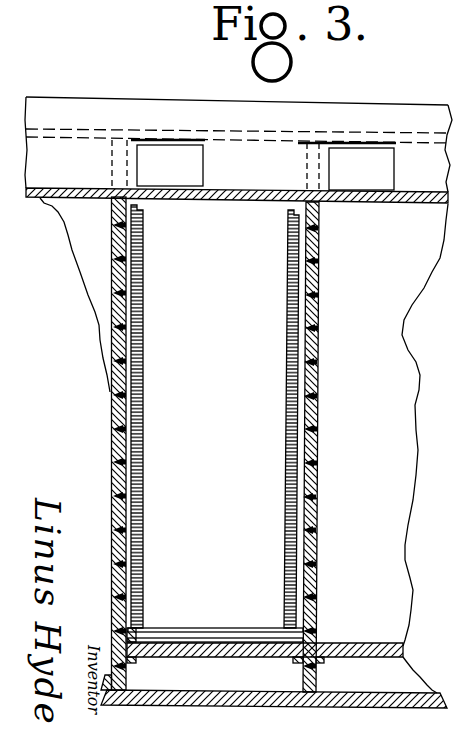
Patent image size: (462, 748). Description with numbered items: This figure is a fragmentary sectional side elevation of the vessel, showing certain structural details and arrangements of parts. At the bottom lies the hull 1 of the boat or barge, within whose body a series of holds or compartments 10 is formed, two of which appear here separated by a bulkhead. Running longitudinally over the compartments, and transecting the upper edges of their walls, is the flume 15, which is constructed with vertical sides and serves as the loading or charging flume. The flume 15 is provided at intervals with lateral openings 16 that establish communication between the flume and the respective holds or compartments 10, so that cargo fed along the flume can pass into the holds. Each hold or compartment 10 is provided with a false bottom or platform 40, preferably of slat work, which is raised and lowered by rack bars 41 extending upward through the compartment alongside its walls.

The hull 1 is at (250, 706).
The holds or compartments 10 is at (244, 445).
The flume 15 is at (380, 118).
The lateral openings 16 is at (263, 165).
The false bottom or platform 40 is at (203, 638).
The rack bars 41 is at (143, 550).